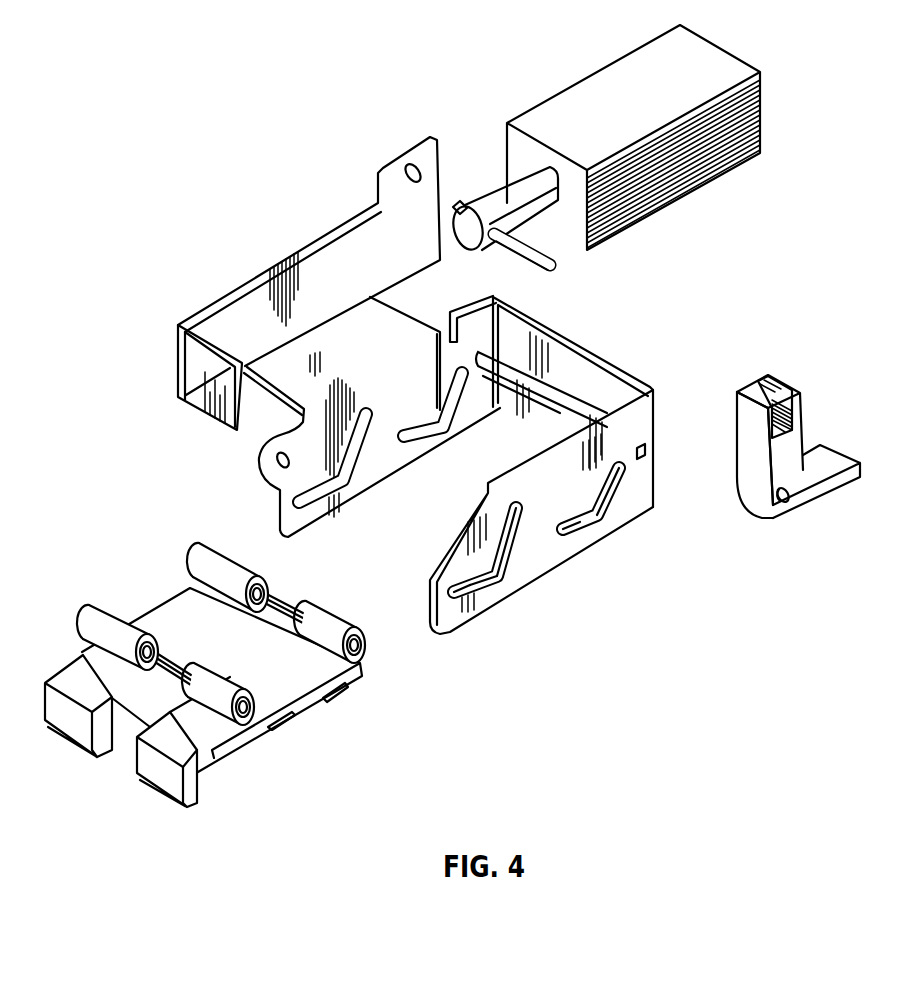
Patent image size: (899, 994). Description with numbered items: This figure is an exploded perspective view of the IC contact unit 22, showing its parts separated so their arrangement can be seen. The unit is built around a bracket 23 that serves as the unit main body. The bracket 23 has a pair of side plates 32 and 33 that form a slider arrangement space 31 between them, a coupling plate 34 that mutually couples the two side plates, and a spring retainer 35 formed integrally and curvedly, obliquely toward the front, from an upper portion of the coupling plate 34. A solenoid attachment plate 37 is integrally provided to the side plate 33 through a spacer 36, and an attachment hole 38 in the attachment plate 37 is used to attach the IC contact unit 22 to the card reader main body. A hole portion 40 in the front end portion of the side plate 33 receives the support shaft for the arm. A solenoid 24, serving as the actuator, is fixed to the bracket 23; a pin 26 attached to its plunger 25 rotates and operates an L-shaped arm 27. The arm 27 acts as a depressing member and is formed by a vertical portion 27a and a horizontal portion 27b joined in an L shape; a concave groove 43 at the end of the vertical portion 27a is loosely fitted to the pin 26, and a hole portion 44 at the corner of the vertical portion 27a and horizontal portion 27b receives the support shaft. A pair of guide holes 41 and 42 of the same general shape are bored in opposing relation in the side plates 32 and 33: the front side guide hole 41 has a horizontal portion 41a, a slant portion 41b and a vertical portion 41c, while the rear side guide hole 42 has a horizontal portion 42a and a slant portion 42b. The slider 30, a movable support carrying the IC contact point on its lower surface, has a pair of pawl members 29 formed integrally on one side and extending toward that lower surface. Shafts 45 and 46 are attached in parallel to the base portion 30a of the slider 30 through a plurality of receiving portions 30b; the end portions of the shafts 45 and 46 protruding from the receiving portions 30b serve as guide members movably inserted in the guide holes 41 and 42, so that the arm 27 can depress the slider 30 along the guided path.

The IC contact unit 22 is at (138, 258).
The bracket 23 is at (656, 388).
The solenoid 24 is at (561, 110).
The plunger 25 is at (495, 200).
The pin 26 is at (522, 258).
The L-shaped arm 27 is at (808, 417).
The vertical portion 27a is at (745, 441).
The horizontal portion 27b is at (828, 487).
The pawl members 29 is at (78, 747).
The slider 30 is at (165, 589).
The base portion 30a is at (253, 657).
The receiving portions 30b is at (224, 546).
The slider arrangement space 31 is at (436, 509).
The side plate 32 is at (542, 572).
The side plate 33 is at (367, 486).
The coupling plate 34 is at (586, 385).
The spring retainer 35 is at (567, 337).
The spacer 36 is at (356, 330).
The solenoid attachment plate 37 is at (243, 310).
The attachment hole 38 is at (416, 164).
The hole portion 40 is at (277, 460).
The front side guide hole 41 is at (372, 408).
The horizontal portion 41a is at (460, 626).
The slant portion 41b is at (505, 575).
The vertical portion 41c is at (524, 536).
The rear side guide hole 42 is at (440, 385).
The horizontal portion 42a is at (592, 542).
The slant portion 42b is at (619, 496).
The concave groove 43 is at (758, 391).
The hole portion 44 is at (788, 504).
The shaft 45 is at (174, 656).
The shaft 46 is at (286, 596).